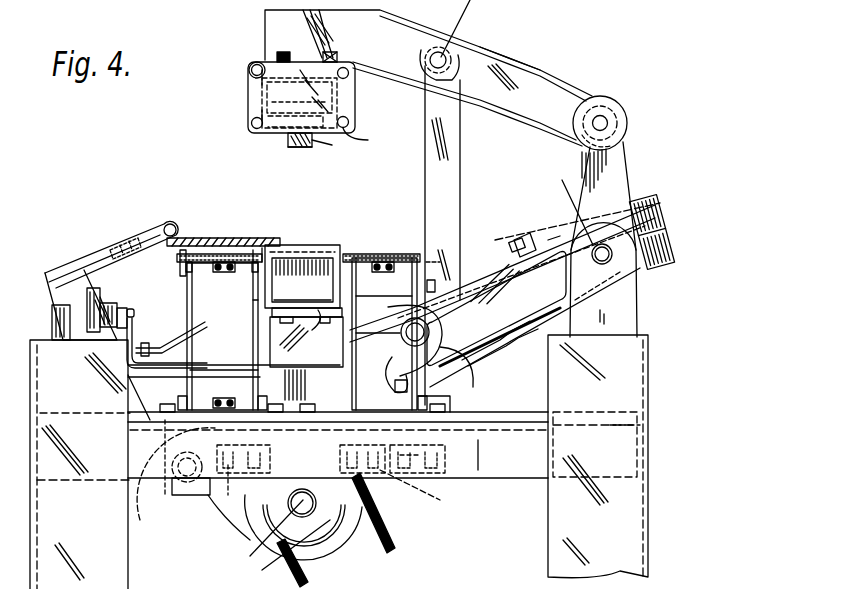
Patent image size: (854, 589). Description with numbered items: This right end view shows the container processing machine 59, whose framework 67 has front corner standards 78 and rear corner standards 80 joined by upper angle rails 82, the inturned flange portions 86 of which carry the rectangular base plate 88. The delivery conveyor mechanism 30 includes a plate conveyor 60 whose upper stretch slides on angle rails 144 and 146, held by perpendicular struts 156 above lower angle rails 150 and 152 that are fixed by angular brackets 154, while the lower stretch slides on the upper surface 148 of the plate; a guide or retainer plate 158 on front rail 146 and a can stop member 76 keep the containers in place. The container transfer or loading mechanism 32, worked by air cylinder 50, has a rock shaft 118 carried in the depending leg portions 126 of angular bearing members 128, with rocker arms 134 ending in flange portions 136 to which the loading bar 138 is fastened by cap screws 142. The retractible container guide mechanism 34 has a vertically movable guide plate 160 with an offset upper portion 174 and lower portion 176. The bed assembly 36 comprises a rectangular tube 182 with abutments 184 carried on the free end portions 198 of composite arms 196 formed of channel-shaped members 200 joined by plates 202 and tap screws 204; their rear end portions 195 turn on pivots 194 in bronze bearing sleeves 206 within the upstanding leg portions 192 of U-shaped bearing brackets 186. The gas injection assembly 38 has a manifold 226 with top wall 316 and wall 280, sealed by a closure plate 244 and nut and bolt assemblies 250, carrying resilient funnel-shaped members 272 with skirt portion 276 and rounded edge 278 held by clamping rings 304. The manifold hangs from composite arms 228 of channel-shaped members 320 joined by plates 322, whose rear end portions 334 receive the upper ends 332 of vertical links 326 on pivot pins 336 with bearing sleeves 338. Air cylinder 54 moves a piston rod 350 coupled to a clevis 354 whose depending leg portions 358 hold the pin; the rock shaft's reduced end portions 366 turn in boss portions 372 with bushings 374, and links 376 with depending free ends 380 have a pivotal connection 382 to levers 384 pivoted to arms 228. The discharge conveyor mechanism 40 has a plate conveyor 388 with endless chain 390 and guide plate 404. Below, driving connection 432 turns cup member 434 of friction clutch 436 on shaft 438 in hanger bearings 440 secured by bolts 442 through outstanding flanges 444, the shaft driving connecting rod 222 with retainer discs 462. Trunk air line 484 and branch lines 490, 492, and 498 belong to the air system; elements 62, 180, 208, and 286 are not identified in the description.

The delivery conveyor mechanism 30 is at (210, 283).
The container transfer or loading mechanism 32 is at (88, 250).
The retractible container guide mechanism 34 is at (252, 335).
The reciprocable container-supporting bed assembly 36 is at (345, 252).
The gas injection assembly 38 is at (245, 58).
The discharge conveyor mechanism 40 is at (400, 243).
The air pressure operated cylinder 50 is at (60, 333).
The air pressure operated cylinder 54 is at (655, 226).
The machine 59 is at (655, 108).
The conveyor 60 is at (225, 258).
The clamp 62 is at (218, 273).
The framework 67 is at (652, 455).
The abutment or can stop member 76 is at (262, 242).
The front corner standards 78 is at (128, 562).
The rear corner standards 80 is at (615, 528).
The angle rails 82 is at (640, 428).
The inturned flange portions 86 is at (75, 415).
The rectangular base plate 88 is at (478, 470).
The rock shaft 118 is at (188, 497).
The depending leg portion 126 is at (208, 495).
The angular bearing member 128 is at (150, 498).
The rocker arms 134 is at (62, 300).
The flange portion 136 is at (75, 262).
The loading bar 138 is at (172, 224).
The cap screws 142 is at (135, 240).
The angle rail 144 is at (253, 250).
The angle rail 146 is at (188, 268).
The upper surface 148 is at (535, 410).
The angle rail 150 is at (286, 370).
The angle rail 152 is at (180, 395).
The angular brackets 154 is at (170, 395).
The perpendicular struts 156 is at (445, 284).
The guide or retainer plate 158 is at (181, 258).
The guide plate 160 is at (283, 284).
The upper portion 174 is at (300, 250).
The lower portion 176 is at (278, 293).
The divider 180 is at (307, 323).
The rectangular tube 182 is at (316, 312).
The upwardly projecting abutment 184 is at (340, 245).
The U-shaped bearing brackets 186 is at (640, 300).
The upstanding leg portions 192 is at (620, 310).
The pivots 194 is at (612, 253).
The rear end portions 195 is at (645, 196).
The composite arms 196 is at (550, 240).
The free end portions 198 is at (272, 348).
The channel-shaped members 200 is at (498, 275).
The plates 202 is at (356, 299).
The tap screws 204 is at (357, 331).
The bronze bearing sleeves 206 is at (562, 180).
The clamp 208 is at (356, 287).
The connecting rod 222 is at (302, 446).
The manifold 226 is at (262, 95).
The composite arms 228 is at (512, 45).
The closure plate 244 is at (266, 108).
The nut and bolt assemblies 250 is at (250, 63).
The funnel-shaped member 272 is at (292, 140).
The skirt portion 276 is at (312, 143).
The rounded lower marginal edge portion 278 is at (300, 148).
The wall 280 is at (312, 100).
The dashed line 286 is at (268, 118).
The clamping ring 304 is at (368, 140).
The top wall 316 is at (320, 60).
The channel-shaped members 320 is at (530, 62).
The plate 322 is at (250, 72).
The links 326 is at (612, 168).
The upper ends 332 is at (605, 108).
The rear end portions 334 is at (628, 124).
The pivot pin 336 is at (606, 117).
The bearing sleeve 338 is at (585, 120).
The piston rod 350 is at (580, 340).
The clevis 354 is at (450, 398).
The depending leg portions 358 is at (420, 345).
The end portions 366 is at (490, 355).
The boss portion 372 is at (450, 312).
The bushing 374 is at (450, 372).
The link 376 is at (395, 385).
The depending free end 380 is at (401, 334).
The pivotal connection 382 is at (428, 380).
The lever 384 is at (445, 182).
The endless conveyor 388 is at (427, 262).
The endless chain 390 is at (385, 254).
The guide plate 404 is at (421, 275).
The driving connection 432 is at (395, 545).
The cup member 434 is at (356, 516).
The clutch 436 is at (360, 545).
The shaft 438 is at (270, 535).
The hanger bearings 440 is at (322, 500).
The bolts 442 is at (440, 500).
The outstanding flanges 444 is at (402, 456).
The retainer discs 462 is at (297, 545).
The trunk air line 484 is at (100, 375).
The branch line 490 is at (130, 308).
The branch line 492 is at (168, 346).
The branch line 498 is at (522, 238).